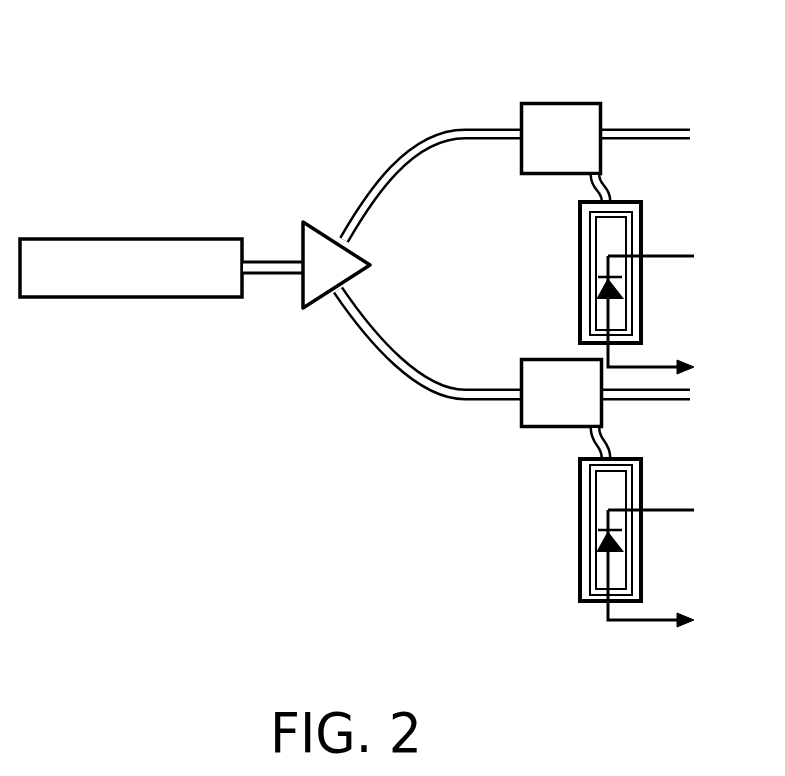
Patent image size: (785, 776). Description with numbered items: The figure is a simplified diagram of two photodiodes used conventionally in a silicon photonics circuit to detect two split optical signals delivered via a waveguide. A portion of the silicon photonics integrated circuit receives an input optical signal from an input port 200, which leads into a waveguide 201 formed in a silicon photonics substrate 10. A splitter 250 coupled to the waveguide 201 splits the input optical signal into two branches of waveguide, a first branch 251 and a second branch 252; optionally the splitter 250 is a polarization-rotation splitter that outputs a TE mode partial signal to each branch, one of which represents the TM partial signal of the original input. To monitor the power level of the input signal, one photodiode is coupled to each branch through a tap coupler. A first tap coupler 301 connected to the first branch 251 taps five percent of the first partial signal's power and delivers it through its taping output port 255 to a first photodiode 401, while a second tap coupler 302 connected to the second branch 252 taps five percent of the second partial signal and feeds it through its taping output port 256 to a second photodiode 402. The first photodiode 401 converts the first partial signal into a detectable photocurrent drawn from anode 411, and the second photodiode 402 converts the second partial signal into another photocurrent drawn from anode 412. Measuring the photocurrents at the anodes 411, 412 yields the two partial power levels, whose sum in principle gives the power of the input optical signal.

The silicon photonics substrate 10 is at (253, 476).
The input port 200 is at (145, 237).
The waveguide 201 is at (287, 265).
The splitter 250 is at (328, 238).
The first branch 251 is at (423, 155).
The second branch 252 is at (458, 388).
The first tap coupler 301 is at (550, 102).
The second tap coupler 302 is at (535, 358).
The taping output port 255 is at (592, 184).
The taping output port 256 is at (592, 444).
The first photodiode 401 is at (578, 293).
The second photodiode 402 is at (578, 557).
The anode 411 is at (694, 367).
The anode 412 is at (694, 624).